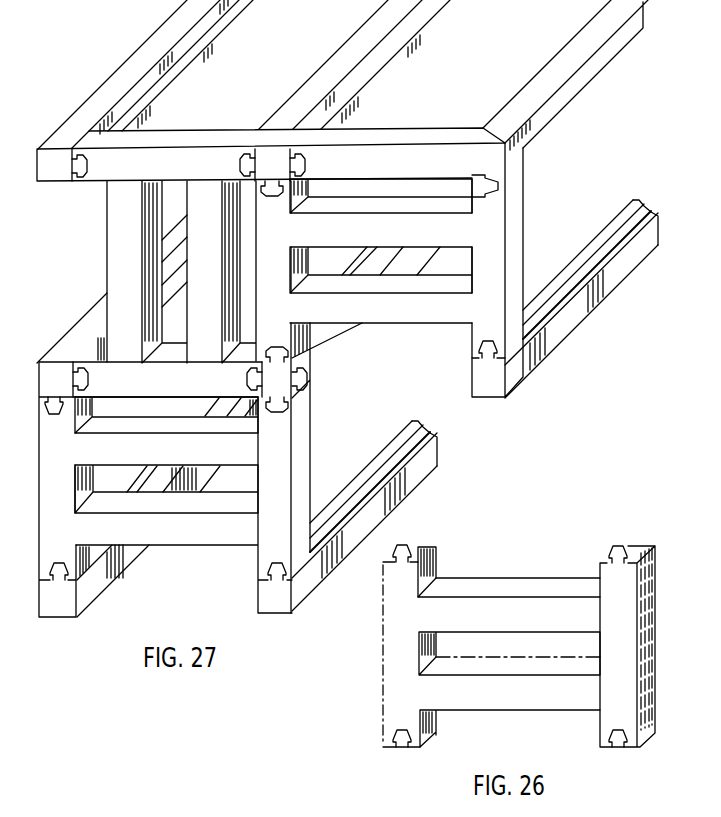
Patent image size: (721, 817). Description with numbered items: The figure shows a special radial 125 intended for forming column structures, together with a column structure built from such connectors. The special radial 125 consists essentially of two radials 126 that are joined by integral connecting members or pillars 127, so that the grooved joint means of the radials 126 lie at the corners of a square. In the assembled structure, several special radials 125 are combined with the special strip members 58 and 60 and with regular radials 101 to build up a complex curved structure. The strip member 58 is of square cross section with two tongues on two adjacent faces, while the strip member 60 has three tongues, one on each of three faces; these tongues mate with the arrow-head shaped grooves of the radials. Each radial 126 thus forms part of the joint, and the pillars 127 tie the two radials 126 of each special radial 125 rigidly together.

In FIG. 27, the strip member 58 is at (57, 373).
In FIG. 27, the strip member 60 is at (276, 157).
In FIG. 27, the regular radial 101 is at (432, 137).
In FIG. 27, the special radial 125 is at (168, 142).
In FIG. 26, the special radial 125 is at (498, 635).
In FIG. 26, the radial 126 is at (392, 633).
In FIG. 26, the connecting member 127 is at (480, 668).